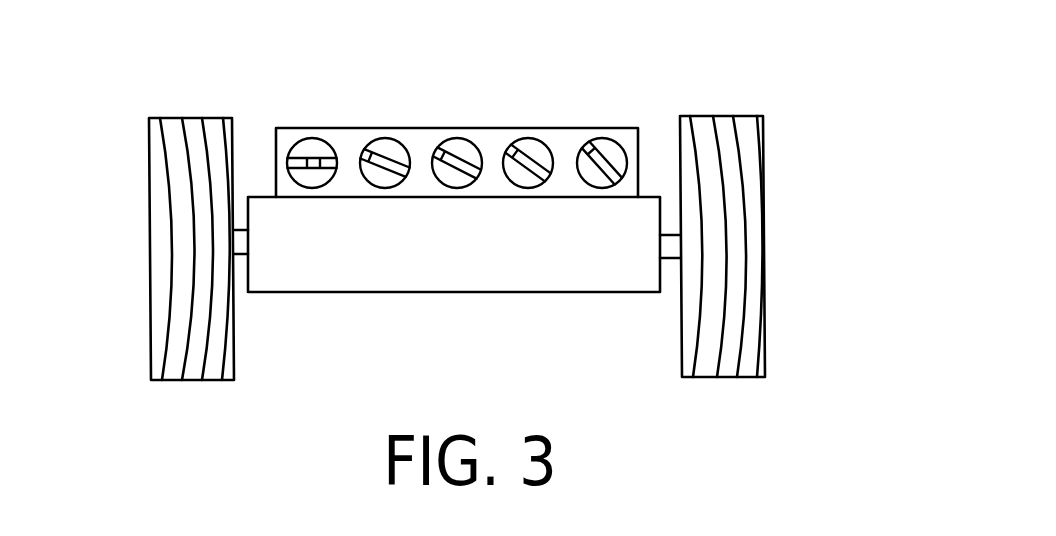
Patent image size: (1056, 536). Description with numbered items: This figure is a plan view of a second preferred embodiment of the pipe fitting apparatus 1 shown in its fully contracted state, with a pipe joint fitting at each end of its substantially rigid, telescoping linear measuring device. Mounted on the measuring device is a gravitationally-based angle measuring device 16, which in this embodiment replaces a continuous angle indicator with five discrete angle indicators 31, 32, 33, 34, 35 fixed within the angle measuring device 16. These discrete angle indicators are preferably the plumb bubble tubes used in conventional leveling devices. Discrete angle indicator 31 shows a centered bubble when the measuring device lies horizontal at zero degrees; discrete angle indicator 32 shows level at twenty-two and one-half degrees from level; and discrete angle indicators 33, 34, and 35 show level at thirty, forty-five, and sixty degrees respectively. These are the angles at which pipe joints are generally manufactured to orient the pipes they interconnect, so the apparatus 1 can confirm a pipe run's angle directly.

The pipe fitting apparatus 1 is at (907, 105).
The gravitationally-based angle measuring device 16 is at (285, 142).
The discrete angle indicator 31 is at (311, 150).
The discrete angle indicator 32 is at (390, 148).
The discrete angle indicator 33 is at (468, 147).
The discrete angle indicator 34 is at (548, 148).
The discrete angle indicator 35 is at (623, 150).